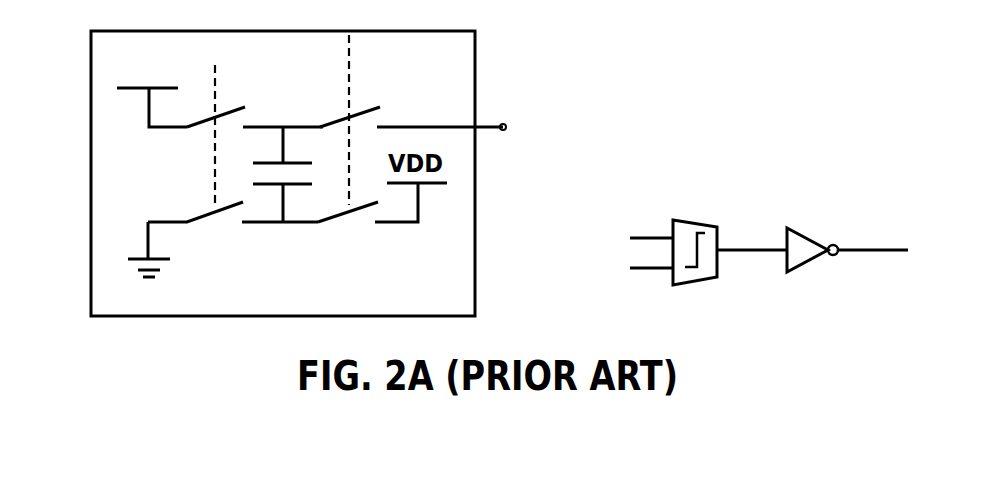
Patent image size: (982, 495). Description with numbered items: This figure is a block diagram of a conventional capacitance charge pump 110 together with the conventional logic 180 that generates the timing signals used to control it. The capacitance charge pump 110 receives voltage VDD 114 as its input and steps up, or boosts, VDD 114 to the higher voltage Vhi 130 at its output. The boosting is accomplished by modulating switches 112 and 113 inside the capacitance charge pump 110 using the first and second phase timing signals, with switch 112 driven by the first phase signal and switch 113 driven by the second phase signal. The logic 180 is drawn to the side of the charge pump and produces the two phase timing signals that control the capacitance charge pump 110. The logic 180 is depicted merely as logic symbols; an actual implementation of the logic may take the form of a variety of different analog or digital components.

The capacitance charge pump 110 is at (475, 31).
The switch 112 is at (216, 92).
The switch 113 is at (350, 92).
The voltage VDD 114 is at (108, 76).
The voltage Vhi 130 is at (530, 109).
The logic 180 is at (878, 287).